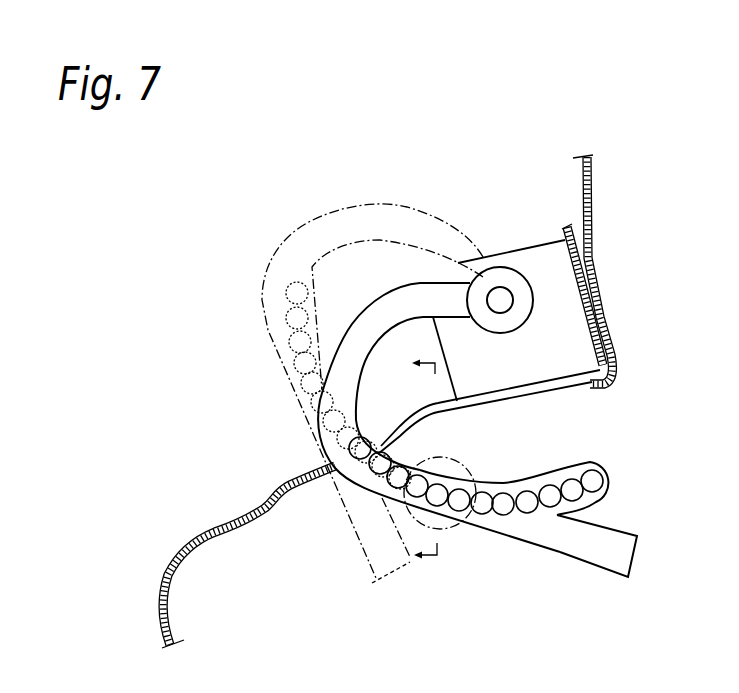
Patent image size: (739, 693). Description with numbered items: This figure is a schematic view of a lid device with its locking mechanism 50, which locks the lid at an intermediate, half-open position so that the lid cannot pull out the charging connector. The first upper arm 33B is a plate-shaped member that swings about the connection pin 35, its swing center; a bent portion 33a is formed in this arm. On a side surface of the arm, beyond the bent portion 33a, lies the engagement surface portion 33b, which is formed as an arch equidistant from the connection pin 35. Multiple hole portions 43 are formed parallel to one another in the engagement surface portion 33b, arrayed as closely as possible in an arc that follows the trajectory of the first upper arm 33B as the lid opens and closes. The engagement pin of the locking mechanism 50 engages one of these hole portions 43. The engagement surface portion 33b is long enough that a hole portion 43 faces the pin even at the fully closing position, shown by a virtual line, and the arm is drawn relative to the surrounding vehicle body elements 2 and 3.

The vehicle body wall 2 is at (592, 174).
The floor panel 3 is at (193, 600).
The bent portion 33a is at (353, 297).
The engagement surface portion 33b is at (581, 468).
The first upper arm 33B is at (605, 550).
The connection pin 35 is at (500, 298).
The hole portions 43 is at (503, 506).
The locking mechanism 50 is at (453, 461).